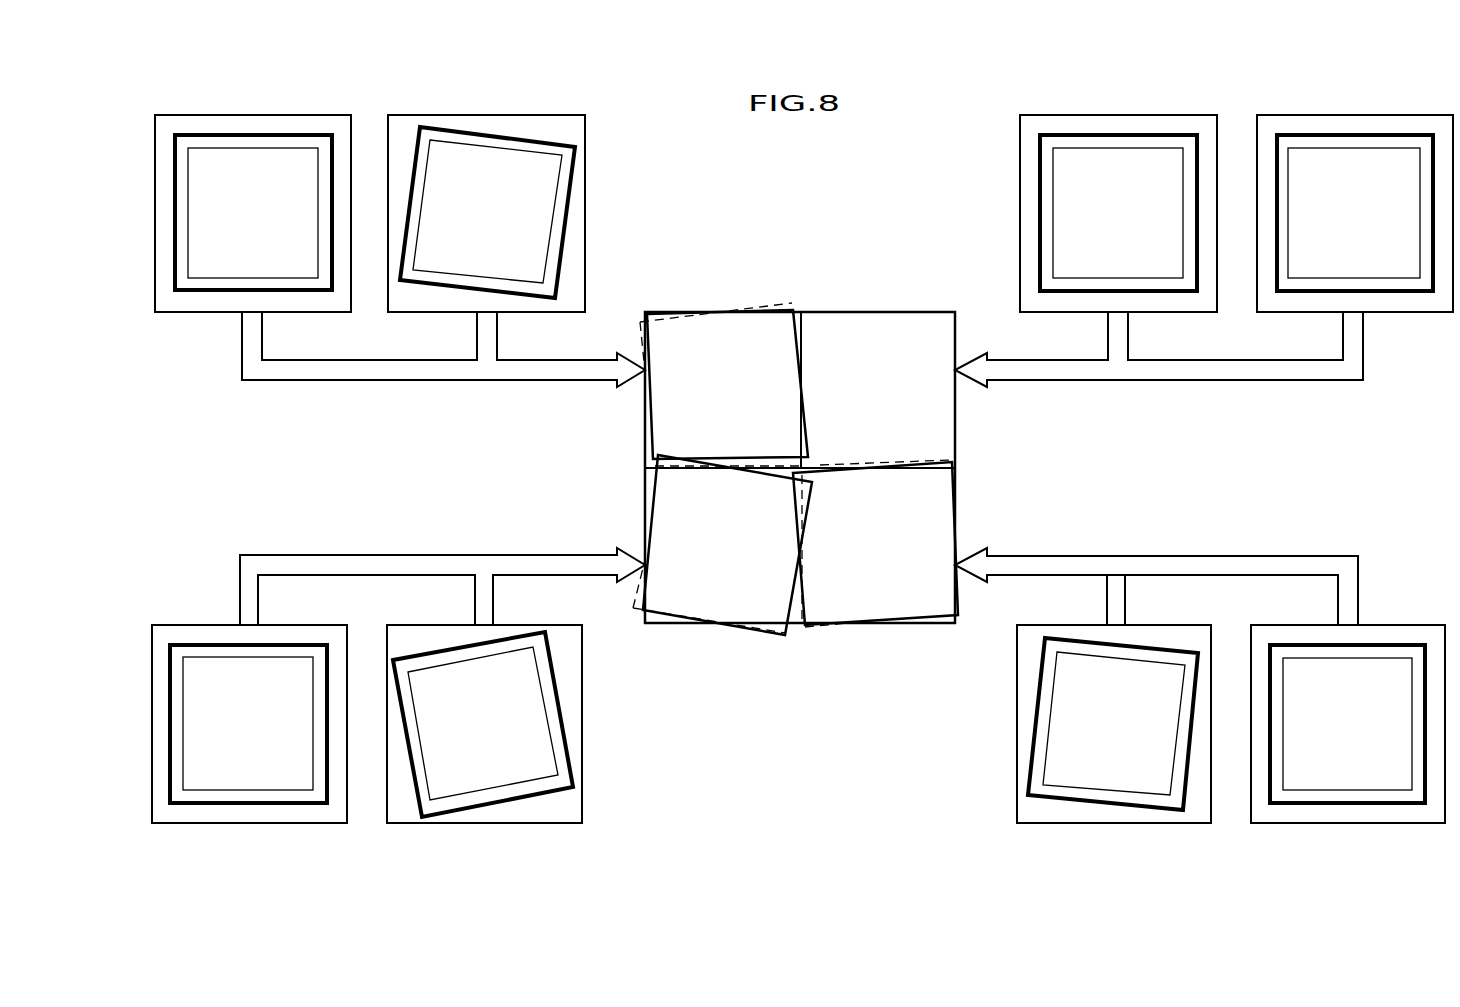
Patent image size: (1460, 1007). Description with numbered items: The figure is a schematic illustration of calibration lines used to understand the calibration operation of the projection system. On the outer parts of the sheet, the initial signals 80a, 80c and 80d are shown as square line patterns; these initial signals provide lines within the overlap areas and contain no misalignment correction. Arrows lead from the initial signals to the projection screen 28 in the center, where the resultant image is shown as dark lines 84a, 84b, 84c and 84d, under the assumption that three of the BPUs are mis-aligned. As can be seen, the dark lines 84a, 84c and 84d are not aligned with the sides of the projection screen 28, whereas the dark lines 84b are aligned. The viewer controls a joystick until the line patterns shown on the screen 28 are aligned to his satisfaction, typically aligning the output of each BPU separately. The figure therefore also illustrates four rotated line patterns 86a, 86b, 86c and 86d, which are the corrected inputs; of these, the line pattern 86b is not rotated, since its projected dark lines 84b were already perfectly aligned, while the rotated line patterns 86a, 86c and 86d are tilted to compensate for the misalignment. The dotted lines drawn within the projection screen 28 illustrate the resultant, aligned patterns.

The initial signal 80a is at (290, 133).
The initial signal 80c is at (1330, 133).
The initial signal 80d is at (1307, 803).
The rotated line pattern 86a is at (540, 137).
The rotated line pattern 86b is at (1167, 133).
The rotated line pattern 86c is at (513, 803).
The rotated line pattern 86d is at (1063, 803).
The dark line 84a is at (717, 347).
The dark line 84b is at (862, 330).
The dark line 84c is at (688, 522).
The dark line 84d is at (905, 537).
The projection screen 28 is at (797, 497).